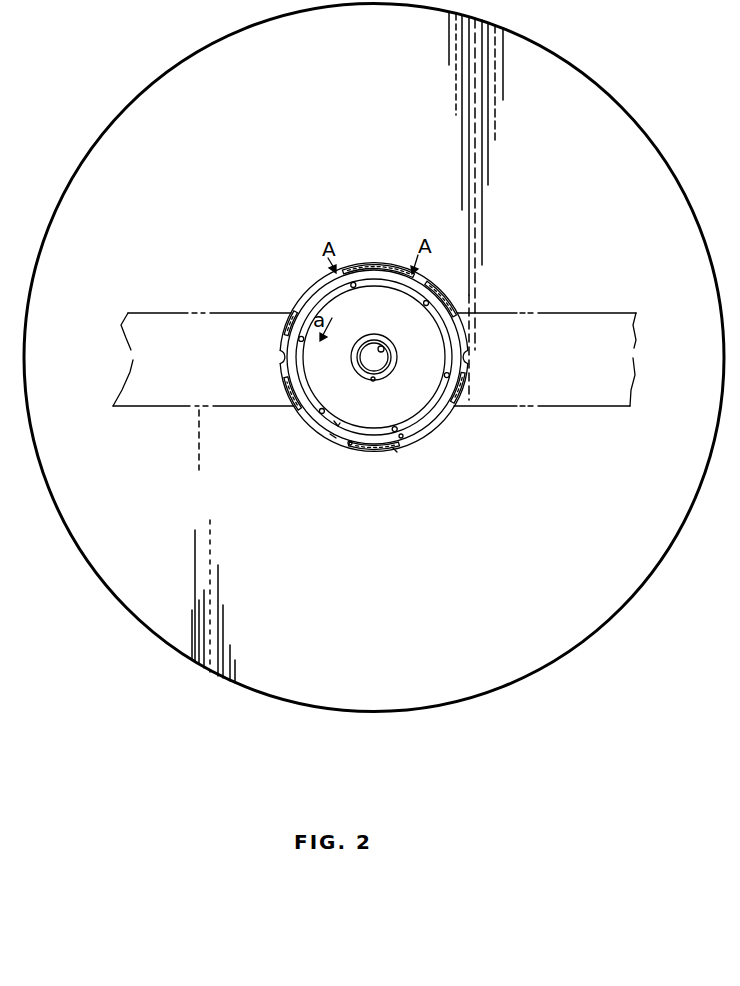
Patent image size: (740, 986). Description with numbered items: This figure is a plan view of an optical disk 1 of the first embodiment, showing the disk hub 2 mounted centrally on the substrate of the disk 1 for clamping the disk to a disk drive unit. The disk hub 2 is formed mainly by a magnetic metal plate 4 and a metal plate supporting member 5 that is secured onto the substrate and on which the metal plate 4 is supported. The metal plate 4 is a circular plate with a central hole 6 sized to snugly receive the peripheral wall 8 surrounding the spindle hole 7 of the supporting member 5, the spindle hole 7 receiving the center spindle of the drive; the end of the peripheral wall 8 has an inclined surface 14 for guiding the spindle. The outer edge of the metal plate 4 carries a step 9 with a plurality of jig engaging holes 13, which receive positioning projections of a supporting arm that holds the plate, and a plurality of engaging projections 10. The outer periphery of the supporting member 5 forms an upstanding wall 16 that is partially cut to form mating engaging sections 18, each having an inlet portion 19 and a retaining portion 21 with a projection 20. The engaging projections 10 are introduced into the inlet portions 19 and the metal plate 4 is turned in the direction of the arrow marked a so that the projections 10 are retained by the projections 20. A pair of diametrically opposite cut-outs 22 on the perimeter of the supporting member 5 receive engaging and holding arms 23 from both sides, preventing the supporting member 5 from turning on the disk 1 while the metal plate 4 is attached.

The disk 1 is at (580, 82).
The disk hub 2 is at (401, 260).
The magnetic metal plate 4 is at (427, 360).
The metal plate supporting member 5 is at (318, 282).
The central hole 6 is at (377, 383).
The spindle hole 7 is at (388, 354).
The peripheral wall 8 is at (378, 341).
The step 9 is at (338, 424).
The engaging projections 10 is at (395, 450).
The jig engaging holes 13 is at (322, 409).
The inclined surface 14 is at (363, 342).
The upstanding wall 16 is at (335, 437).
The mating engaging sections 18 is at (362, 450).
The inlet portion 19 is at (352, 445).
The projection 20 is at (378, 450).
The retaining portion 21 is at (403, 436).
The cut-outs 22 is at (466, 354).
The engaging and holding arms 23 is at (200, 386).